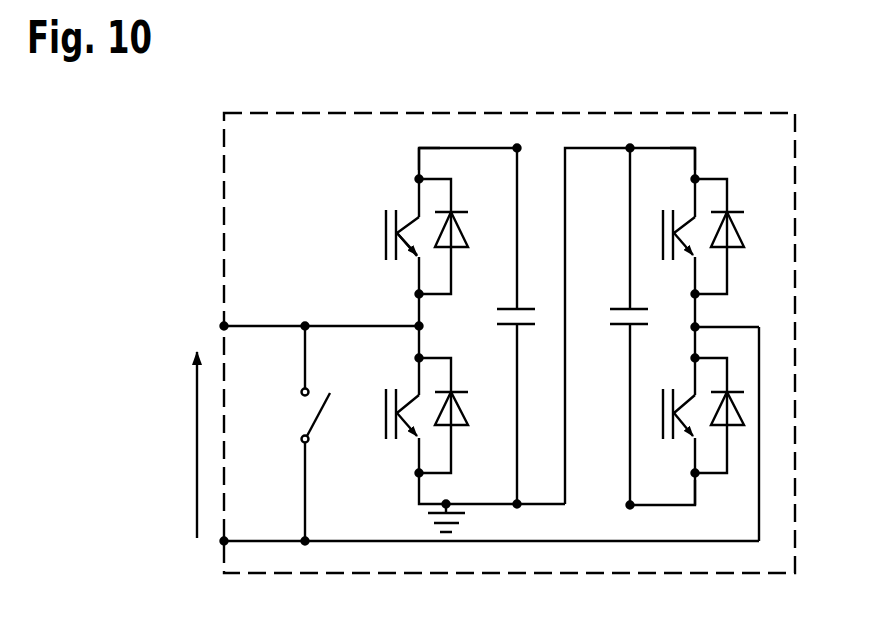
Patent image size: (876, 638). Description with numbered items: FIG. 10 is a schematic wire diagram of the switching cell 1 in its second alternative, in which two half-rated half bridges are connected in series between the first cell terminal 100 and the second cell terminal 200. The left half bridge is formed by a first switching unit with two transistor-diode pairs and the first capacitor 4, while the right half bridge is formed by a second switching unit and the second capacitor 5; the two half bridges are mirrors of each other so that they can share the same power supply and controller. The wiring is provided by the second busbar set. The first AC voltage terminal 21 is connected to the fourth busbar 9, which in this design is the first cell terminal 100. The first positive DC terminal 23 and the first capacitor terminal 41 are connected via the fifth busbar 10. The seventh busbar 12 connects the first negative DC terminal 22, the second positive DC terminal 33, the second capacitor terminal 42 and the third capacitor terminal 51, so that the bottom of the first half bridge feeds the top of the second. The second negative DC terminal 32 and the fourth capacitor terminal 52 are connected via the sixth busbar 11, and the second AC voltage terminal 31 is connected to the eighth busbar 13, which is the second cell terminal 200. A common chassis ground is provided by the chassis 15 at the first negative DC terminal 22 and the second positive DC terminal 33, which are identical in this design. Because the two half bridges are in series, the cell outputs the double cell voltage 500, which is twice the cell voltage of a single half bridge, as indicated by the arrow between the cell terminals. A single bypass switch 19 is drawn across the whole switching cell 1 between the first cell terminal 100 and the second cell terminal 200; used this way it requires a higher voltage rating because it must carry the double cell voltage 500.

The switching cell 1 is at (168, 109).
The first capacitor 4 is at (529, 337).
The second capacitor 5 is at (624, 335).
The fourth busbar 9 is at (343, 326).
The fifth busbar 10 is at (443, 335).
The sixth busbar 11 is at (729, 335).
The seventh busbar 12 is at (565, 185).
The eighth busbar 13 is at (331, 542).
The chassis 15 is at (427, 523).
The bypass switch 19 is at (299, 409).
The first AC voltage terminal 21 is at (414, 319).
The first negative DC terminal 22 is at (416, 492).
The first positive DC terminal 23 is at (414, 157).
The second AC voltage terminal 31 is at (702, 321).
The second negative DC terminal 32 is at (702, 494).
The second positive DC terminal 33 is at (702, 160).
The first capacitor terminal 41 is at (513, 139).
The second capacitor terminal 42 is at (512, 509).
The third capacitor terminal 51 is at (633, 139).
The fourth capacitor terminal 52 is at (637, 511).
The first cell terminal 100 is at (224, 326).
The second cell terminal 200 is at (224, 541).
The double cell voltage 500 is at (197, 437).